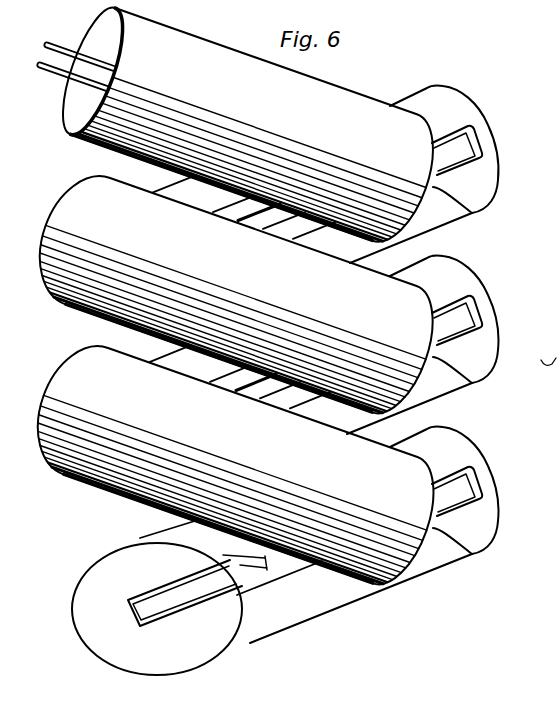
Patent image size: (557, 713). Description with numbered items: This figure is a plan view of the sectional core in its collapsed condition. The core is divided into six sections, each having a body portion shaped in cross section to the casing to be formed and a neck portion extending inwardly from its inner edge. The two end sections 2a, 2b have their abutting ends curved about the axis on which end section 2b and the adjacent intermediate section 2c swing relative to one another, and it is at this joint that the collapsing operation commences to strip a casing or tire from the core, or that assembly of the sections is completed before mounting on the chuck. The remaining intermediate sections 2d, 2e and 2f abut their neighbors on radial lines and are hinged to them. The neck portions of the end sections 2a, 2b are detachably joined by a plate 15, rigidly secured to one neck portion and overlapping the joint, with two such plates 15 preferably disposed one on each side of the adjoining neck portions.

The end core section 2b is at (338, 96).
The intermediate core section 2d is at (373, 282).
The intermediate core section 2f is at (383, 453).
The intermediate core section 2c is at (487, 201).
The intermediate core section 2e is at (480, 277).
The end core section 2a is at (473, 455).
The plate 15 is at (47, 42).